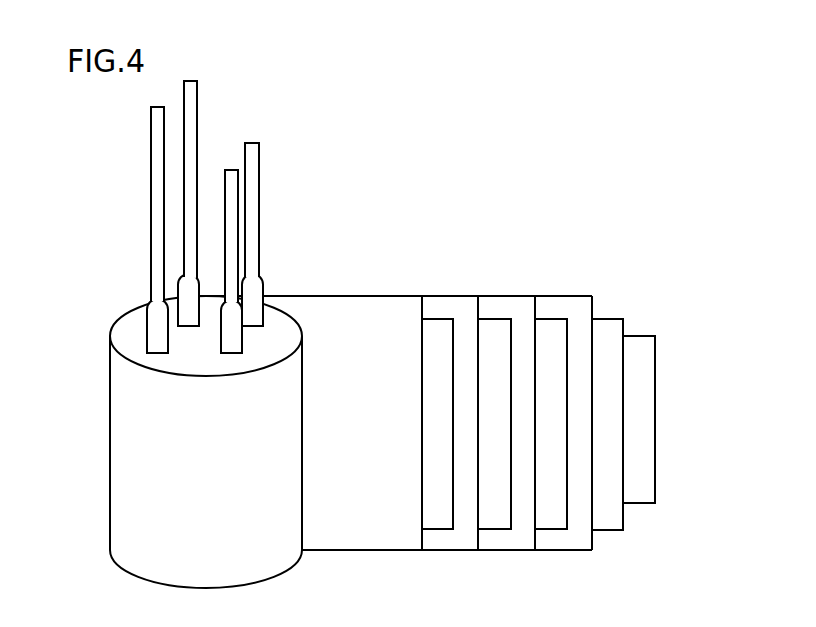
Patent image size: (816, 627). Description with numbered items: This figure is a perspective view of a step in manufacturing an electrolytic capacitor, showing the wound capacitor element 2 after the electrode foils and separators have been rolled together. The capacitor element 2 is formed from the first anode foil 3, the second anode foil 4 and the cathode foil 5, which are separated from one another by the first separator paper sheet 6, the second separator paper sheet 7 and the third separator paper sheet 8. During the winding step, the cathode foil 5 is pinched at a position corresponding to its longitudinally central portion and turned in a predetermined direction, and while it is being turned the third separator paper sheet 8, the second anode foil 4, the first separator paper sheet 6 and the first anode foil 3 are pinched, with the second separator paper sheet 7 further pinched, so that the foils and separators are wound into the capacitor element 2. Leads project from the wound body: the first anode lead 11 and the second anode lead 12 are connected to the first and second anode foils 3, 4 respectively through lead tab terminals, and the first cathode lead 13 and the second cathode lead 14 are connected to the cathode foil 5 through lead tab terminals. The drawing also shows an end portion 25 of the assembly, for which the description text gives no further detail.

The capacitor element 2 is at (155, 458).
The first anode foil 3 is at (438, 335).
The second anode foil 4 is at (550, 335).
The cathode foil 5 is at (493, 335).
The first separator paper sheet 6 is at (452, 538).
The second separator paper sheet 7 is at (507, 538).
The third separator paper sheet 8 is at (565, 537).
The first anode lead 11 is at (189, 182).
The second anode lead 12 is at (157, 222).
The first cathode lead 13 is at (250, 234).
The second cathode lead 14 is at (232, 203).
The end portion 25 is at (635, 437).